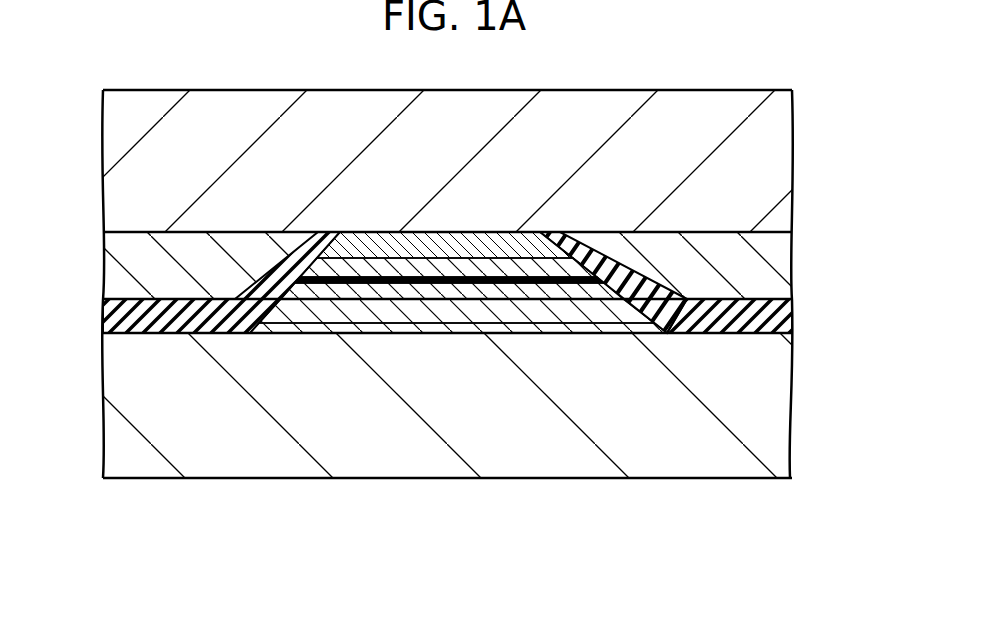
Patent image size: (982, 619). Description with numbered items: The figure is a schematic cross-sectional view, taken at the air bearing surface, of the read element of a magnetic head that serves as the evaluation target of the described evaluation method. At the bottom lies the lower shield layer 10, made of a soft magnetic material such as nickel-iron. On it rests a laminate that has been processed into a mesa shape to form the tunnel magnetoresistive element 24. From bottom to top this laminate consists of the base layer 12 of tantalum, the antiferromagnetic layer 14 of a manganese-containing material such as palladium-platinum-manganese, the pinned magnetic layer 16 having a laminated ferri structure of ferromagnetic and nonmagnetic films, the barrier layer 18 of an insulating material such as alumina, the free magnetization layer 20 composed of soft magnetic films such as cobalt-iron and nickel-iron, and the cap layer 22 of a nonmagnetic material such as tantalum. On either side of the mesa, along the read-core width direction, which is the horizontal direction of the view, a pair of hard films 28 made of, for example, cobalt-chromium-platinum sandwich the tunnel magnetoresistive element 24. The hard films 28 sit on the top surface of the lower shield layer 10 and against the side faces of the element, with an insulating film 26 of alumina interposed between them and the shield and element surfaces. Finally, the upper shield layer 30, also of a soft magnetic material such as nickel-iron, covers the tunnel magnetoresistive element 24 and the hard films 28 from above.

The lower shield layer 10 is at (778, 394).
The base layer 12 is at (575, 538).
The antiferromagnetic layer 14 is at (350, 308).
The pinned magnetic layer 16 is at (403, 292).
The barrier layer 18 is at (457, 281).
The free magnetization layer 20 is at (504, 268).
The cap layer 22 is at (542, 246).
The tunnel magnetoresistive (TMR) element 24 is at (458, 414).
The insulating film 26 is at (104, 313).
The hard films 28 is at (115, 261).
The upper shield layer 30 is at (778, 146).